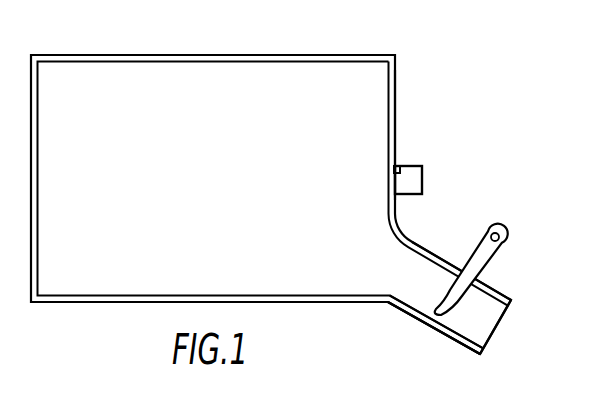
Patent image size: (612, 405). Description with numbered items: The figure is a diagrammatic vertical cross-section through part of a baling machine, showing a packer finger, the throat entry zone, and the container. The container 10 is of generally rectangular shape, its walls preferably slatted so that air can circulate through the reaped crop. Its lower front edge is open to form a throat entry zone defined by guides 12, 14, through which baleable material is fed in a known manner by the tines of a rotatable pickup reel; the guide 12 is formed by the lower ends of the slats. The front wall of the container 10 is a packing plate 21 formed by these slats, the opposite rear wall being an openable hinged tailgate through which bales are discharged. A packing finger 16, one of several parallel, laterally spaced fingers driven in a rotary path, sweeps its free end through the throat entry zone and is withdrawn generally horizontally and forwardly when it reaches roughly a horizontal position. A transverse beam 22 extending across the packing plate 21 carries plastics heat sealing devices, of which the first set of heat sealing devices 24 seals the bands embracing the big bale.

The container 10 is at (133, 50).
The packing plate 21 is at (396, 84).
The transverse beam 22 is at (399, 166).
The heat sealing devices 24 is at (423, 175).
The packing fingers 16 is at (484, 246).
The guide 12 is at (496, 292).
The guide 14 is at (456, 341).